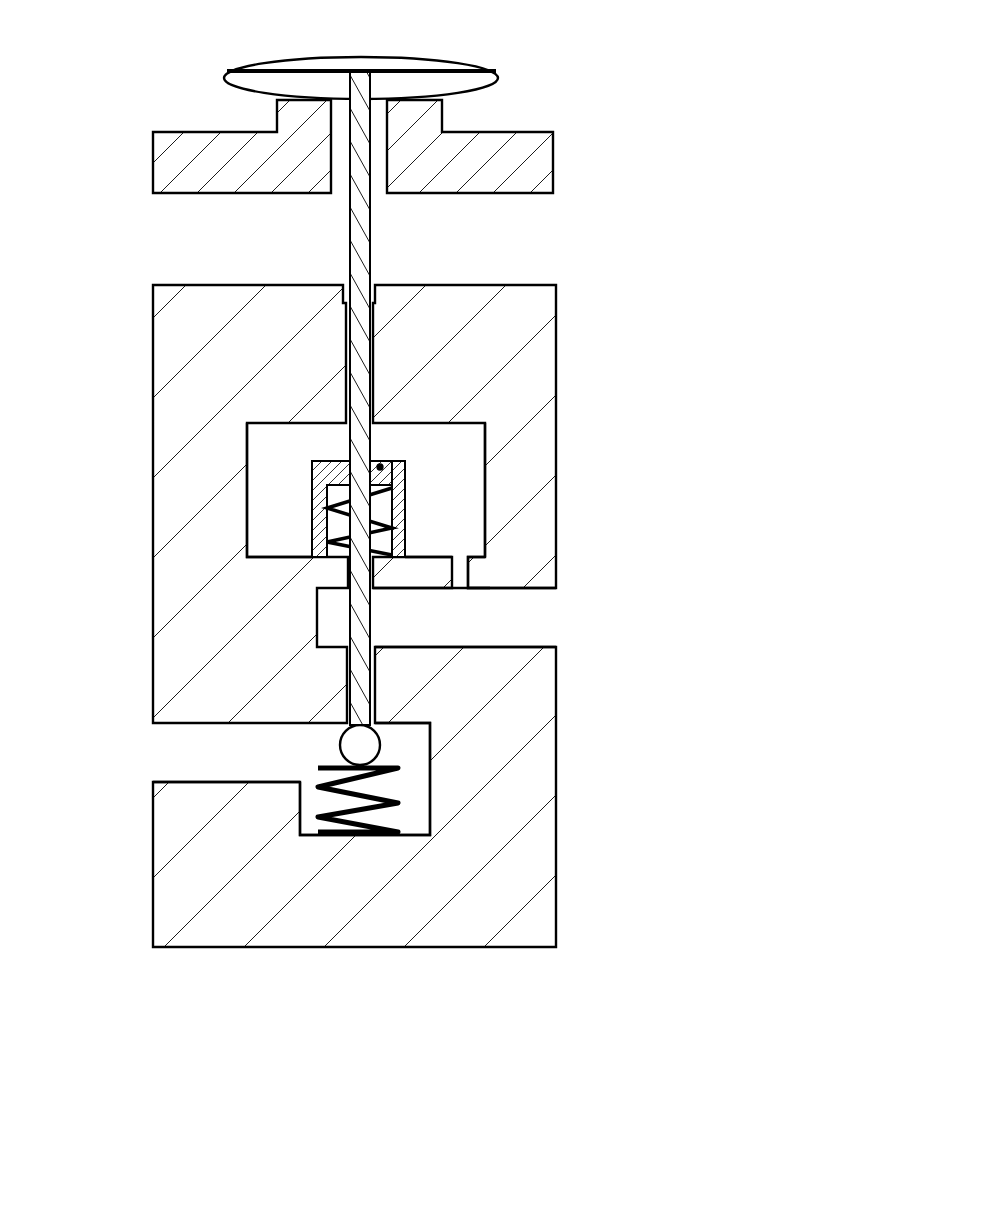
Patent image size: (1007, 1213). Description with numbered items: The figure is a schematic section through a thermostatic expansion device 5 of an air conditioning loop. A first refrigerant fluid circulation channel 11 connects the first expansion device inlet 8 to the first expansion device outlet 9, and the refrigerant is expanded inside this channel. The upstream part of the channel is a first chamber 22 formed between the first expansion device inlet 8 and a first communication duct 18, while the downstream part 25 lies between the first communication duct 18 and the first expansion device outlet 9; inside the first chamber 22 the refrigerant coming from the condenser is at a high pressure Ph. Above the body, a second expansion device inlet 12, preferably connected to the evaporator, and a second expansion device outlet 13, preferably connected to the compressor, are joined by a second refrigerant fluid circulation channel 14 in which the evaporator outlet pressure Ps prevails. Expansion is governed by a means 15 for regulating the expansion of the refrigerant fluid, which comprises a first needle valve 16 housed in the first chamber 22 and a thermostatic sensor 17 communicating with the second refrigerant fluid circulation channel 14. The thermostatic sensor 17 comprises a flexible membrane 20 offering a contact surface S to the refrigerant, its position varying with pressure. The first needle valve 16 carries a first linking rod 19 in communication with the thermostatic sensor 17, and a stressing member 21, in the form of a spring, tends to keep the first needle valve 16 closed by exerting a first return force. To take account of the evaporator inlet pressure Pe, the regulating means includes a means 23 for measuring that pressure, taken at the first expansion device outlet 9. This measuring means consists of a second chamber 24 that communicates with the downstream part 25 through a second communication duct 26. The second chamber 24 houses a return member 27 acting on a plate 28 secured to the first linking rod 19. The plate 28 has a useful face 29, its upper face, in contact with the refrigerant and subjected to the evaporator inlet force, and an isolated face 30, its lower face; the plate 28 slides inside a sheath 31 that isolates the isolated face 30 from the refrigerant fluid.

The expansion device 5 is at (603, 491).
The first expansion device inlet 8 is at (150, 751).
The first expansion device outlet 9 is at (558, 616).
The first refrigerant fluid circulation channel 11 is at (256, 760).
The second expansion device inlet 12 is at (540, 244).
The second expansion device outlet 13 is at (150, 240).
The second refrigerant fluid circulation channel 14 is at (430, 255).
The means for regulating the expansion of the refrigerant fluid 15 is at (345, 264).
The first needle valve 16 is at (340, 748).
The thermostatic sensor 17 is at (425, 55).
The first communication duct 18 is at (347, 673).
The first linking rod 19 is at (372, 612).
The membrane 20 is at (263, 67).
The stressing member 21 is at (392, 797).
The first chamber 22 is at (395, 748).
The means for measuring the evaporator inlet refrigerant fluid pressure 23 is at (373, 259).
The second chamber 24 is at (440, 453).
The downstream part 25 is at (450, 623).
The second communication duct 26 is at (473, 572).
The return member 27 is at (332, 537).
The plate 28 is at (380, 467).
The useful face 29 is at (333, 462).
The isolated face 30 is at (385, 482).
The sheath 31 is at (407, 518).